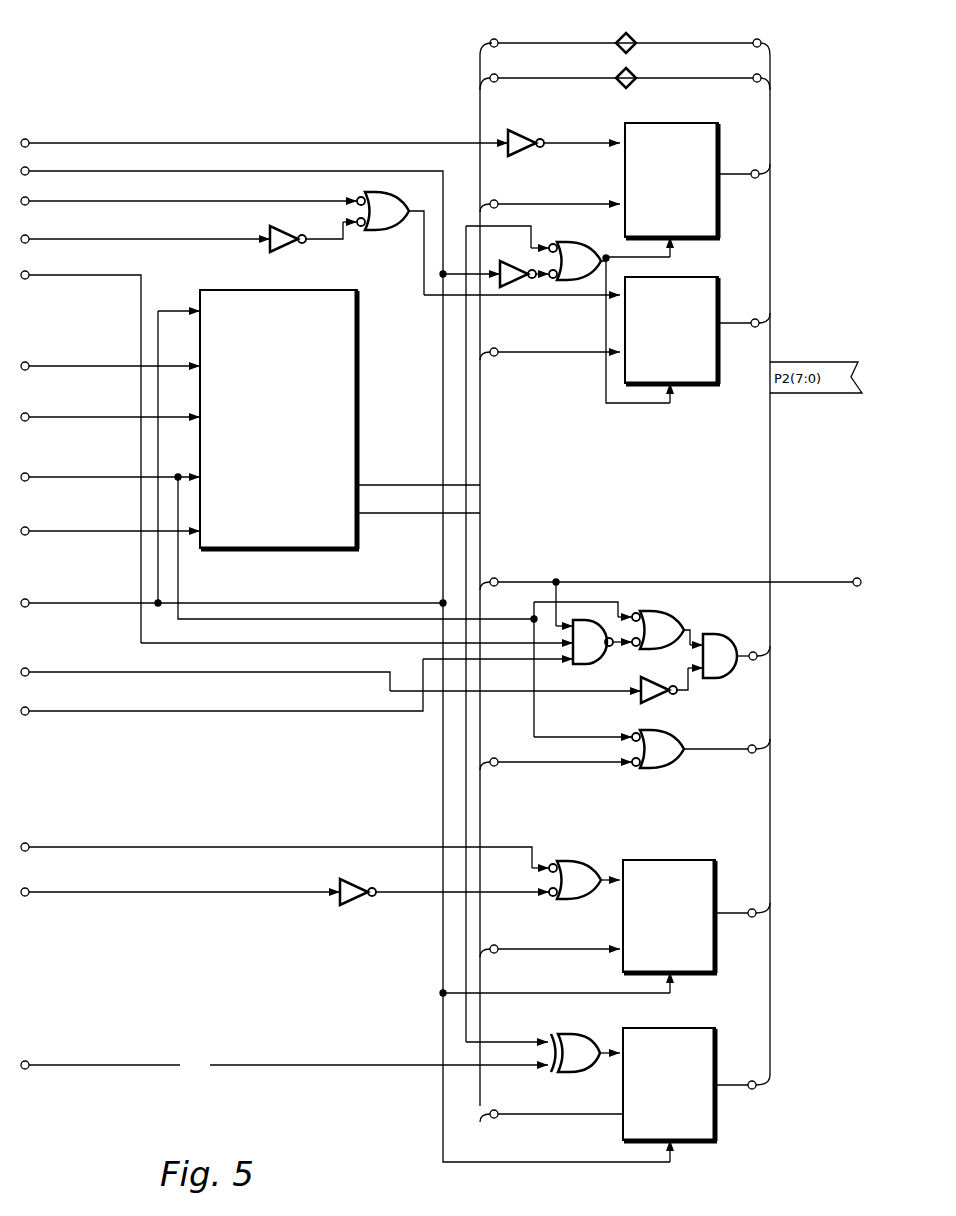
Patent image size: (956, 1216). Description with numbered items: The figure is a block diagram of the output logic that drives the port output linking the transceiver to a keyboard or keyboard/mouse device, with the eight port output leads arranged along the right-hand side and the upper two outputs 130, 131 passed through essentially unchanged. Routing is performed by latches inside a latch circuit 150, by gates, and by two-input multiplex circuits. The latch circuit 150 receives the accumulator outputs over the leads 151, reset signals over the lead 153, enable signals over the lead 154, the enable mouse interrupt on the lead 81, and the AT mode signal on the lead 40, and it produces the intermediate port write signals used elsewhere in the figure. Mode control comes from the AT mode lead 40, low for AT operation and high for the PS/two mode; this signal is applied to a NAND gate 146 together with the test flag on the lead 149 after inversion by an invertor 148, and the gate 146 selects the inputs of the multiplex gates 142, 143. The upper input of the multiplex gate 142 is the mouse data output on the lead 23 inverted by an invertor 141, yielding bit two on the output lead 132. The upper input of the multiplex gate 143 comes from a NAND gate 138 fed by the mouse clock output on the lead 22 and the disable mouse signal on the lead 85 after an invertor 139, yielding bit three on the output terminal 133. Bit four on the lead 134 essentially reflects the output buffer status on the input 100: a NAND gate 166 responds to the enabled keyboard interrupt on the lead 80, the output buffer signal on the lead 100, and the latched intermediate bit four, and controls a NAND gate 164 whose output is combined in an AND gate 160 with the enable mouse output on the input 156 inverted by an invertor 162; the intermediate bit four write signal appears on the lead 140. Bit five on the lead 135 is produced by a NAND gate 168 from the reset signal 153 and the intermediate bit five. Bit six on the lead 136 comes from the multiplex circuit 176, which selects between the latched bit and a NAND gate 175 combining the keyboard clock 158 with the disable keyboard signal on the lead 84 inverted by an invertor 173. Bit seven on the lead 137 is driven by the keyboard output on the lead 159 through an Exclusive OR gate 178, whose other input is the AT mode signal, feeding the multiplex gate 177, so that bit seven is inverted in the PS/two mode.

The P2(0) output pad 130 is at (651, 16).
The P2(1) output pad 131 is at (651, 52).
The mouse data output lead 23 is at (133, 148).
The test flag lead 149 is at (133, 178).
The mouse clock output lead 22 is at (133, 207).
The disable mouse signal lead 85 is at (133, 244).
The invertor 139 is at (298, 240).
The NAND gate 138 is at (378, 229).
The enabled keyboard interrupt lead 80 is at (73, 284).
The latch circuit 150 is at (326, 292).
The enable mouse interrupt lead 81 is at (73, 374).
The accumulator output leads 151 is at (73, 425).
The reset lead 153 is at (73, 484).
The enable lead 154 is at (73, 539).
The AT mode lead 40 is at (73, 610).
The enable mouse output input 156 is at (73, 679).
The output buffer status input 100 is at (73, 719).
The invertor 141 is at (520, 144).
The two-input multiplex gate 142 is at (684, 126).
The bit 2 output lead 132 is at (734, 178).
The invertor 148 is at (528, 261).
The NAND gate 146 is at (571, 250).
The two-input multiplex gate 143 is at (690, 280).
The bit 3 output terminal 133 is at (734, 327).
The P2WR(4) signal 140 is at (705, 586).
The NAND gate 166 is at (602, 666).
The NAND gate 164 is at (670, 618).
The invertor 162 is at (668, 702).
The AND gate 160 is at (714, 688).
The bit 4 output lead 134 is at (745, 652).
The NAND gate 168 is at (684, 766).
The bit 5 output lead 135 is at (694, 758).
The keyboard clock 158 is at (134, 827).
The disable keyboard signal lead 84 is at (134, 872).
The invertor 173 is at (370, 895).
The NAND gate 175 is at (571, 858).
The two-input multiplex gate 176 is at (672, 856).
The bit 6 output lead 136 is at (726, 910).
The keyboard output lead 159 is at (129, 1043).
The Exclusive OR gate 178 is at (579, 1036).
The two-input multiplex gate 177 is at (698, 1028).
The bit 7 output lead 137 is at (724, 1080).